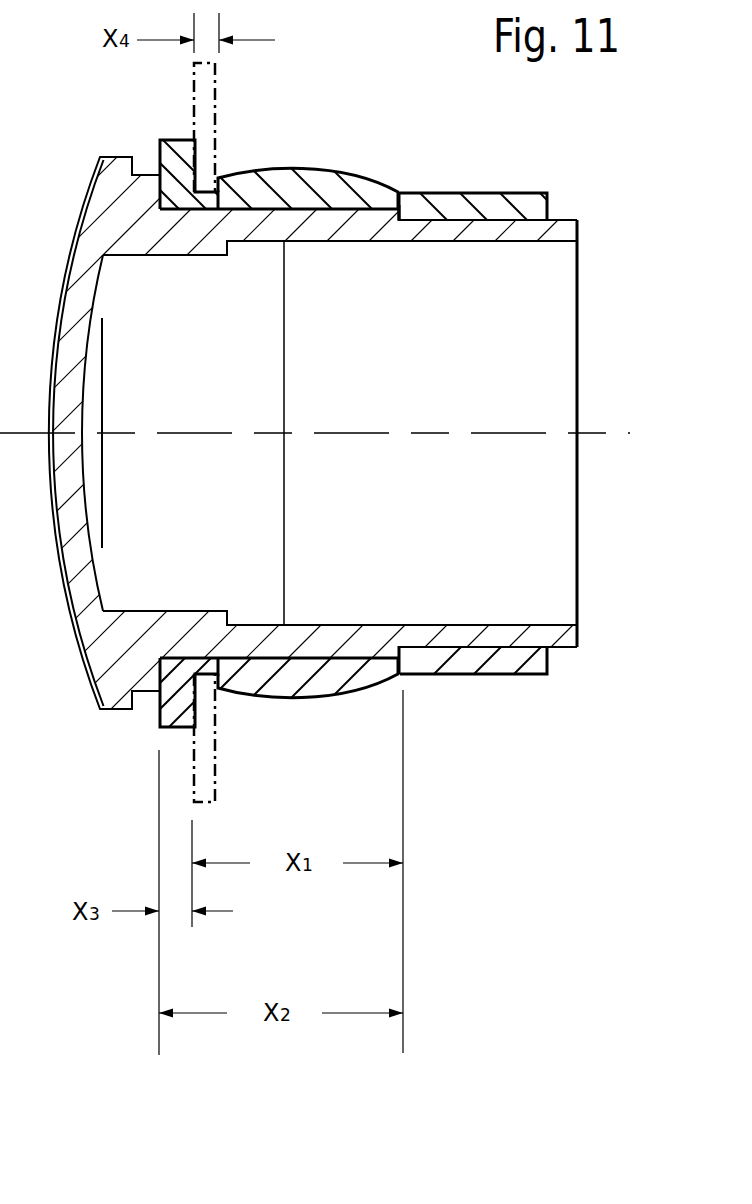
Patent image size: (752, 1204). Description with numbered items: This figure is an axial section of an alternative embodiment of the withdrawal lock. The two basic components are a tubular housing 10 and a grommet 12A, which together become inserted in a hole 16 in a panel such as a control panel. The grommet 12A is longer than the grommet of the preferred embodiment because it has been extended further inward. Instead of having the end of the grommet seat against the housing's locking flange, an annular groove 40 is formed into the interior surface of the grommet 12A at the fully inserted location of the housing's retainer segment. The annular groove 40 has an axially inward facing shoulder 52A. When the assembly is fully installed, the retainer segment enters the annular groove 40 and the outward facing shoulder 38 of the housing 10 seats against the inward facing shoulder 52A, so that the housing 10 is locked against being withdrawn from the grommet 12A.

The tubular housing 10 is at (127, 663).
The grommet 12A is at (452, 660).
The hole 16 is at (213, 190).
The shoulder 38 is at (398, 206).
The annular groove 40 is at (405, 212).
The axially inward facing shoulder 52A is at (404, 651).